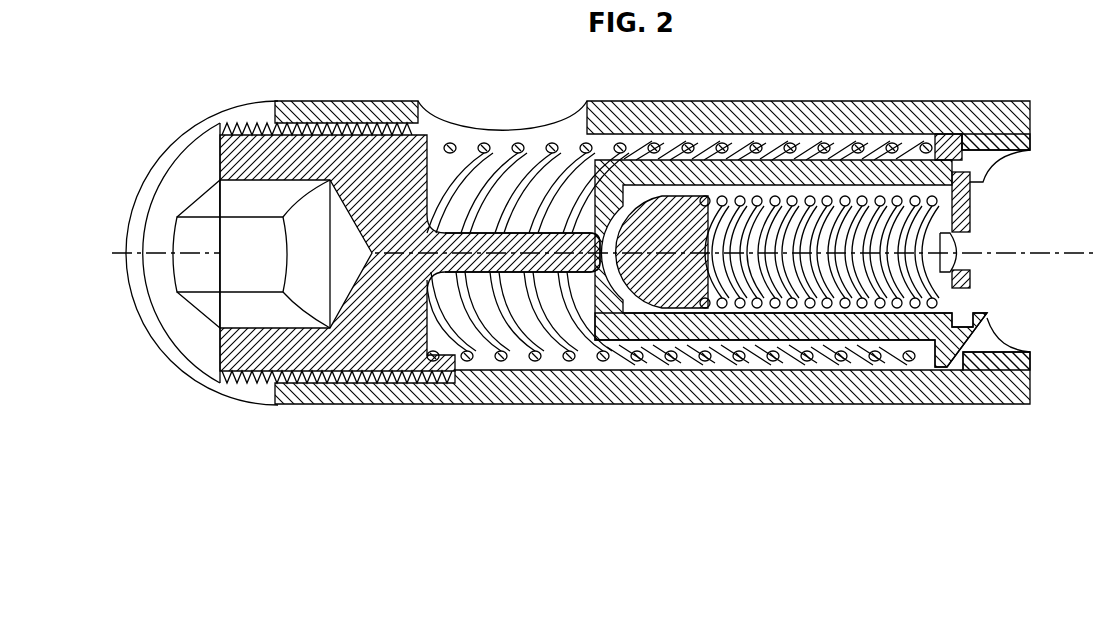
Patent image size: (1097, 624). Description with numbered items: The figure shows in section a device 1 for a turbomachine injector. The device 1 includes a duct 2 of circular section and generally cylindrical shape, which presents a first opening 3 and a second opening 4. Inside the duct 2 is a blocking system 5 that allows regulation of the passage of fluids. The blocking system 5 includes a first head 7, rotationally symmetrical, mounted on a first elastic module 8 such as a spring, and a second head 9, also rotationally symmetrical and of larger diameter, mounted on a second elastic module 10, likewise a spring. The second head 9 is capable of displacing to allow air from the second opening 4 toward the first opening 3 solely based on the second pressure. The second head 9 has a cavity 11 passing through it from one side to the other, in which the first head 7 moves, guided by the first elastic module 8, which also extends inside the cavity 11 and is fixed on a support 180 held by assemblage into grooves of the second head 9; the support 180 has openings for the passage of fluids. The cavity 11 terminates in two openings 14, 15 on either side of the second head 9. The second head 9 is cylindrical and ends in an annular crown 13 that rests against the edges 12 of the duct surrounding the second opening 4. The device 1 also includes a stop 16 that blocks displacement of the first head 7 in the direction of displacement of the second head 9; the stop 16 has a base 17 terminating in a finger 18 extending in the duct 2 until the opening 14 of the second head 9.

The device 1 is at (716, 59).
The duct 2 is at (812, 117).
The first opening 3 is at (503, 126).
The second opening 4 is at (1004, 311).
The blocking system 5 is at (868, 318).
The first head 7 is at (676, 278).
The first elastic module 8 is at (906, 360).
The second head 9 is at (876, 165).
The second elastic module 10 is at (587, 395).
The cavity 11 is at (777, 255).
The edges 12 is at (987, 135).
The annular crown 13 is at (957, 135).
The opening 14 is at (590, 282).
The opening 15 is at (978, 272).
The stop 16 is at (405, 292).
The base 17 is at (395, 182).
The finger 18 is at (488, 235).
The support 180 is at (976, 207).